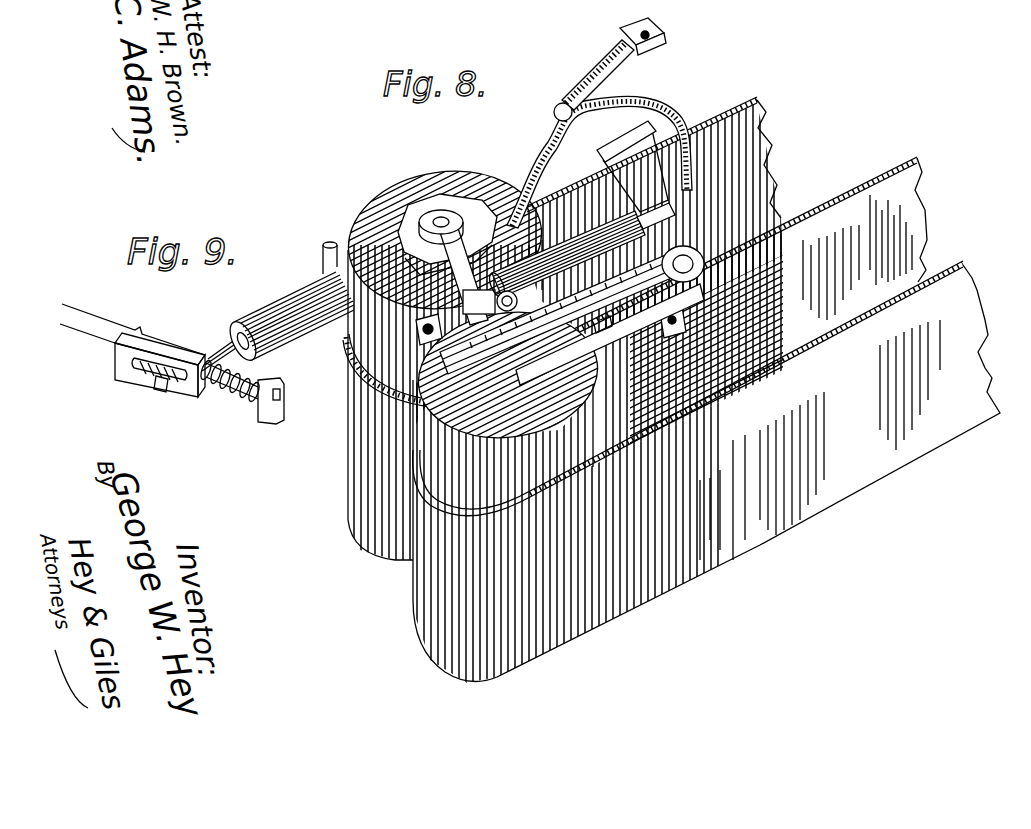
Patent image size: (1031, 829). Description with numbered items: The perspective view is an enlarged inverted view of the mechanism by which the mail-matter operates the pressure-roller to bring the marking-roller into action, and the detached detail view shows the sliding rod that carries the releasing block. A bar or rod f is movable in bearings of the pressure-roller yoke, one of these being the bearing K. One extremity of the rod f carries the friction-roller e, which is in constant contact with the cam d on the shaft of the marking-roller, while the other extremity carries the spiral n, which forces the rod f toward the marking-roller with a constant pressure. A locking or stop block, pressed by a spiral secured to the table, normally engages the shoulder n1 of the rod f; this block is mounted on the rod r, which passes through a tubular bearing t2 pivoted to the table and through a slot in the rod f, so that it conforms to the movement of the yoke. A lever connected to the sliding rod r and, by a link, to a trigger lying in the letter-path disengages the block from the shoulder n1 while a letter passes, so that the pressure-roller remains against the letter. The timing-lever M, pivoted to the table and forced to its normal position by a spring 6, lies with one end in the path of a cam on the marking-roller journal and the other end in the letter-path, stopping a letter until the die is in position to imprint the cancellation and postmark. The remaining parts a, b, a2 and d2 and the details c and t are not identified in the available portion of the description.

In FIG. 8, the top rail of trough wall a is at (718, 122).
In FIG. 8, the trough side plate b is at (665, 350).
In FIG. 8, the rear drum a2 is at (665, 350).
In FIG. 8, the front drum d2 is at (665, 317).
In FIG. 8, the timing-lever M is at (602, 160).
In FIG. 8, the spring 6 is at (618, 48).
In FIG. 8, the friction-roller e is at (505, 256).
In FIG. 8, the cam d is at (436, 210).
In FIG. 8, the pin c is at (458, 219).
In FIG. 8, the rod t is at (630, 250).
In FIG. 9, the rod f is at (132, 323).
In FIG. 9, the shoulder n1 is at (117, 372).
In FIG. 9, the rod r is at (214, 346).
In FIG. 9, the tubular bearing t2 is at (288, 295).
In FIG. 9, the spiral n is at (228, 393).
In FIG. 9, the bearing K is at (285, 393).